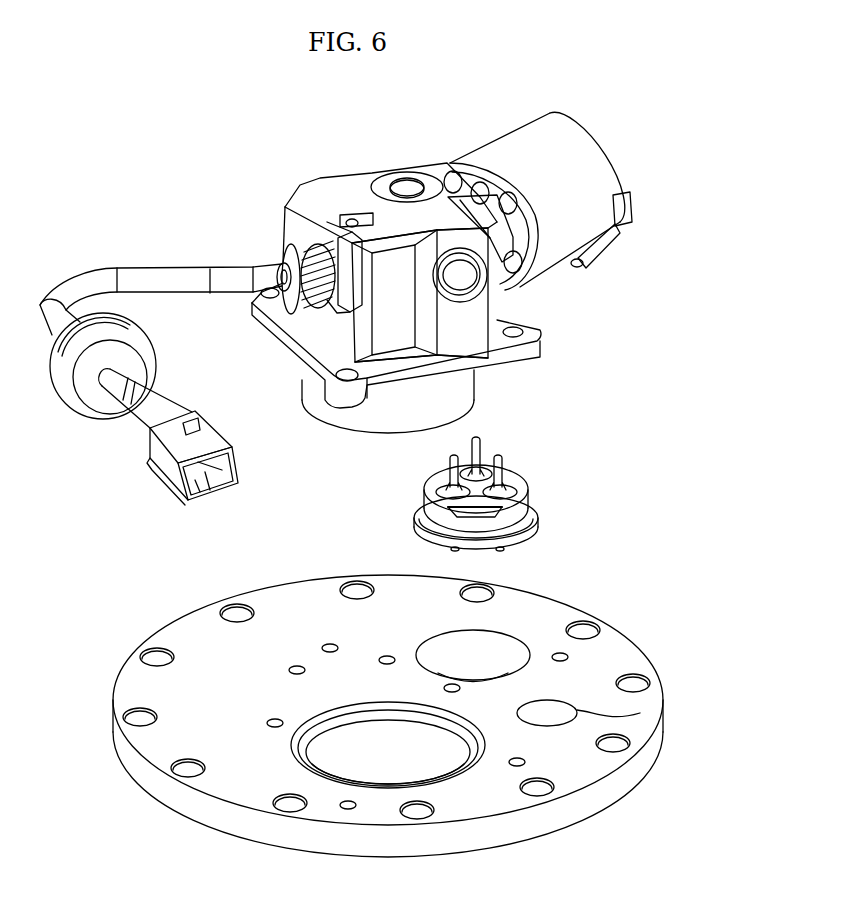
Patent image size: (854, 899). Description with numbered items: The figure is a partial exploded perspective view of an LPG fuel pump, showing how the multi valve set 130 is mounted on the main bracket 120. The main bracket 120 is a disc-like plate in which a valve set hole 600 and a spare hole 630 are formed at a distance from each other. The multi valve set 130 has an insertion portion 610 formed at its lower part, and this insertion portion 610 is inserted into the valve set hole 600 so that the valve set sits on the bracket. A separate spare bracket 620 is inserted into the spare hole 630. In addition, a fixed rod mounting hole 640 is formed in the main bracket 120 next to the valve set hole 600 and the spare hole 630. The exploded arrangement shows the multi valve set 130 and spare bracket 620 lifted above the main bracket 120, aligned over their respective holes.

The main bracket 120 is at (210, 808).
The multi valve set 130 is at (388, 273).
The valve set hole 600 is at (387, 770).
The insertion portion 610 is at (360, 423).
The spare bracket 620 is at (527, 481).
The spare hole 630 is at (500, 648).
The fixed rod mounting hole 640 is at (663, 712).